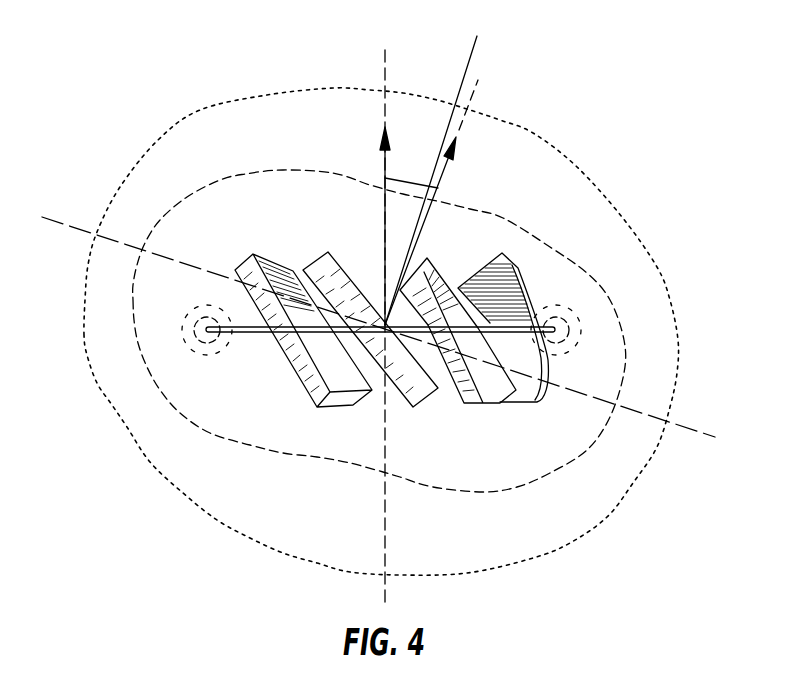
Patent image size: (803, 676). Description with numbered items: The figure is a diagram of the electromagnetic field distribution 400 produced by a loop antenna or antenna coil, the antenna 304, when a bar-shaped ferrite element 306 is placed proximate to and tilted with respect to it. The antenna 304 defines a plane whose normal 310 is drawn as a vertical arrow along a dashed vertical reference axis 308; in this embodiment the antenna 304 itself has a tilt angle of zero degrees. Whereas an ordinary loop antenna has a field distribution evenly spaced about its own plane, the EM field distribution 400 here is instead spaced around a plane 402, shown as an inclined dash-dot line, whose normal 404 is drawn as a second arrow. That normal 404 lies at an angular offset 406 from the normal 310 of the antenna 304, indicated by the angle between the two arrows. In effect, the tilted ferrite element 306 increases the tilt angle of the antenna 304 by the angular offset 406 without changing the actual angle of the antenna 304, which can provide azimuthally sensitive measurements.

The antenna 304 is at (213, 306).
The ferrite element 306 is at (490, 323).
The vertical reference axis 308 is at (380, 65).
The normal 310 is at (380, 167).
The EM field distribution 400 is at (217, 108).
The plane 402 is at (682, 427).
The normal 404 is at (453, 161).
The angular offset 406 is at (449, 169).